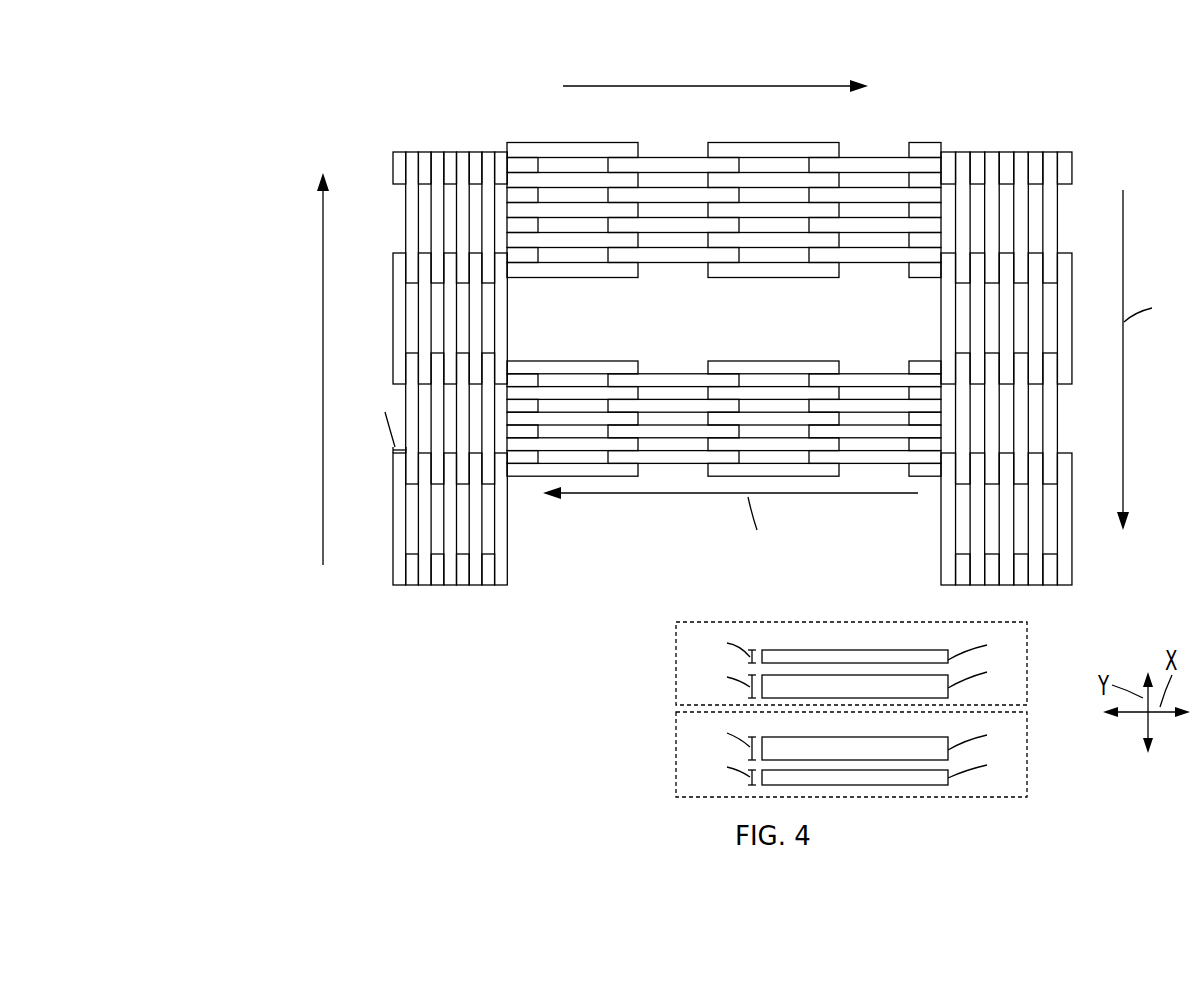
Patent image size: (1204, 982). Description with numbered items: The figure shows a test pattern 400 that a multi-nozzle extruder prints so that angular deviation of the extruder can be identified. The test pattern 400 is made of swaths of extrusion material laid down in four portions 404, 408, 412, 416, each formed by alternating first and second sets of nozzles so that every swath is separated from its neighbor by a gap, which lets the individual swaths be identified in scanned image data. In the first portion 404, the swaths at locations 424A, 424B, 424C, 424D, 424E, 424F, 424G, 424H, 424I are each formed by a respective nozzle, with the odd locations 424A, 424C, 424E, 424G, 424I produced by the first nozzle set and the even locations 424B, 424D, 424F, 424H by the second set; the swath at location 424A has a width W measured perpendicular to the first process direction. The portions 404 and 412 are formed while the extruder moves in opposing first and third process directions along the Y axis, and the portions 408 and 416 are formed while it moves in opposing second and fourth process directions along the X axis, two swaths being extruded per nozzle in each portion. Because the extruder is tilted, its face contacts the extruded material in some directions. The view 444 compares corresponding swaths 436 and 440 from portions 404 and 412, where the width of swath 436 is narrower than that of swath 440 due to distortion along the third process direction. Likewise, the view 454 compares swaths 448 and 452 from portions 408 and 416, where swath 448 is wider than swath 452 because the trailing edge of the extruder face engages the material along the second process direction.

The test pattern 400 is at (290, 177).
The first portion of the test pattern 404 is at (442, 126).
The second portion of the test pattern 408 is at (618, 306).
The third portion of the test pattern 412 is at (1044, 124).
The fourth portion of the test pattern 416 is at (763, 335).
The swath location 424A is at (395, 581).
The swath location 424B is at (407, 585).
The swath location 424C is at (427, 585).
The swath location 424D is at (441, 585).
The swath location 424E is at (450, 573).
The swath location 424F is at (465, 585).
The swath location 424G is at (473, 583).
The swath location 424H is at (490, 585).
The swath location 424I is at (507, 585).
The swath 436 is at (395, 270).
The swath 440 is at (945, 318).
The view 444 is at (675, 662).
The swath 448 is at (678, 143).
The swath 452 is at (678, 361).
The view 454 is at (675, 753).